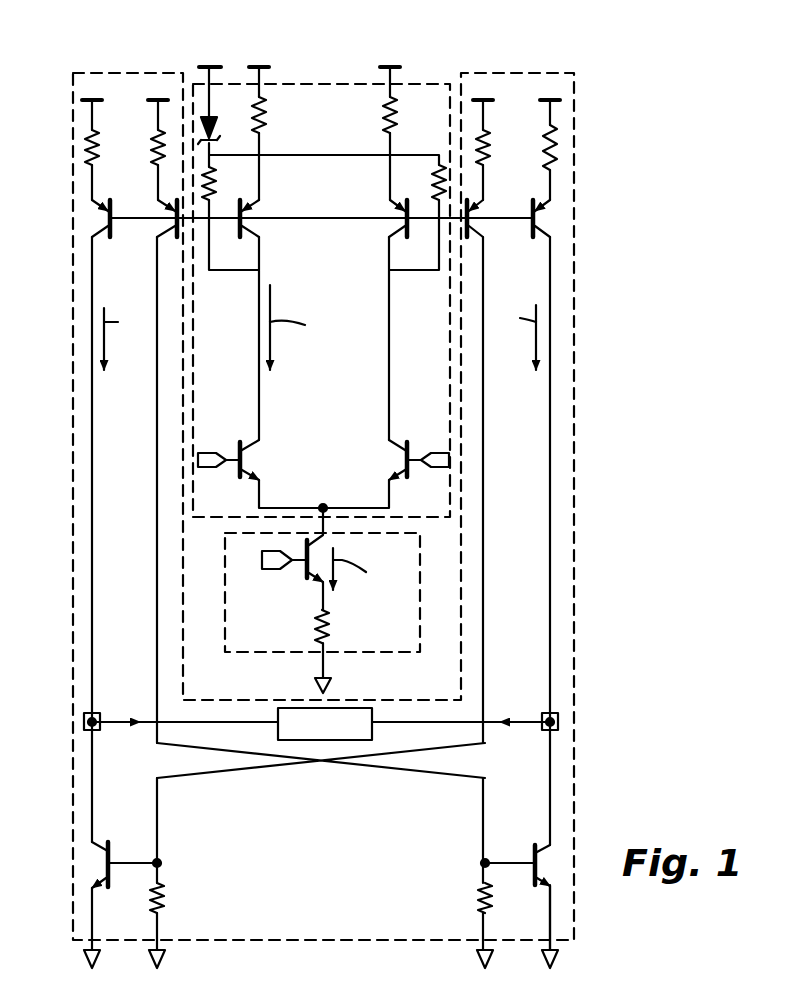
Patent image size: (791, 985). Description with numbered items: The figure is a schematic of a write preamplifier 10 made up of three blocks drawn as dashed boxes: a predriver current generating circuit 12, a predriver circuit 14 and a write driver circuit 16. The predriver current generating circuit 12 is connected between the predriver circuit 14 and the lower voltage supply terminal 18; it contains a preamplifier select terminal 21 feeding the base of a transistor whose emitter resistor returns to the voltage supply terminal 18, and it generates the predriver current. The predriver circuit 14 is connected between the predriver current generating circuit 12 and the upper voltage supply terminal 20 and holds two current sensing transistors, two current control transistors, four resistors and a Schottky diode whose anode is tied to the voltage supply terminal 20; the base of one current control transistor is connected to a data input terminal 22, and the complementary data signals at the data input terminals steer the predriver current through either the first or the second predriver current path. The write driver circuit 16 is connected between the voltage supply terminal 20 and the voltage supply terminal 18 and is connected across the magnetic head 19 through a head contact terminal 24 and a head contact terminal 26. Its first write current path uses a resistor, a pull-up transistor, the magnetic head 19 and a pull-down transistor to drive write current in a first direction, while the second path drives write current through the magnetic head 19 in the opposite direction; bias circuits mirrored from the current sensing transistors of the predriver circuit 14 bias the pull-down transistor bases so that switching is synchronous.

The write preamplifier 10 is at (598, 31).
The predriver current generating circuit 12 is at (226, 652).
The predriver circuit 14 is at (303, 84).
The write driver circuit 16 is at (76, 73).
The voltage supply terminal 18 is at (331, 686).
The magnetic head 19 is at (345, 740).
The voltage supply terminal 20 is at (95, 100).
The preamplifier select terminal 21 is at (292, 580).
The data input terminal 22 is at (230, 436).
The head contact terminal 24 is at (100, 730).
The head contact terminal 26 is at (558, 730).